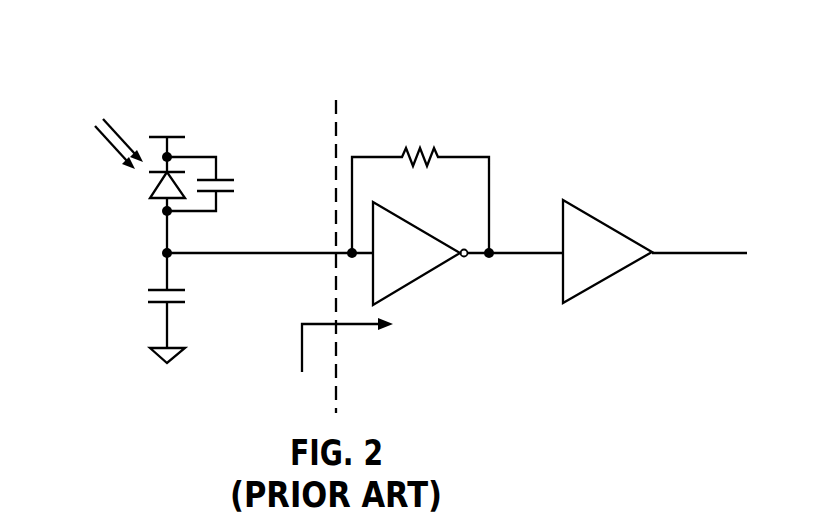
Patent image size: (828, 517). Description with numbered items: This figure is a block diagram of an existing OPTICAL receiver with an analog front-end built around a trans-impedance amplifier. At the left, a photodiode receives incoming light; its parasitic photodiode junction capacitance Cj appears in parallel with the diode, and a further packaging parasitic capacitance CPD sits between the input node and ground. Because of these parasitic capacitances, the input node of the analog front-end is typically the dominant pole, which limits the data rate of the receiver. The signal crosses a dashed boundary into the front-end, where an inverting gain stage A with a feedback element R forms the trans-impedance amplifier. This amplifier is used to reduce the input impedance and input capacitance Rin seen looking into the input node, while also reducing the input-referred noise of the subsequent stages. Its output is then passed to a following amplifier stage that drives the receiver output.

The photodiode junction capacitance Cj is at (176, 186).
The packaging parasitic capacitance CPD is at (147, 305).
The feedback resistor R is at (420, 192).
The trans-impedance amplifier A is at (420, 253).
The input impedance Rin is at (336, 360).
The optical receiver OPTICAL is at (523, 75).